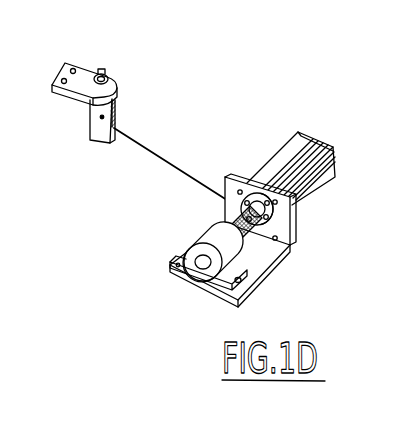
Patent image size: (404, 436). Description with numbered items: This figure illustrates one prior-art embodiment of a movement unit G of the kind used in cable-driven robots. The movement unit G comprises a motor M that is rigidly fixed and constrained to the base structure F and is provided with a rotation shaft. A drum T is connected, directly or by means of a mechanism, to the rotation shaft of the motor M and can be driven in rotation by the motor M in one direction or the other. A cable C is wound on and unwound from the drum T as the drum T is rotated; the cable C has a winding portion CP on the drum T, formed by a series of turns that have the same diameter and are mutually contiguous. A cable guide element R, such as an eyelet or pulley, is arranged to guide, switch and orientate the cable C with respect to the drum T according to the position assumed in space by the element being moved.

The movement unit G is at (252, 142).
The cable C is at (102, 70).
The cable guide element R is at (125, 102).
The base structure F is at (291, 246).
The motor M is at (307, 148).
The winding portion CP is at (274, 224).
The drum T is at (248, 243).